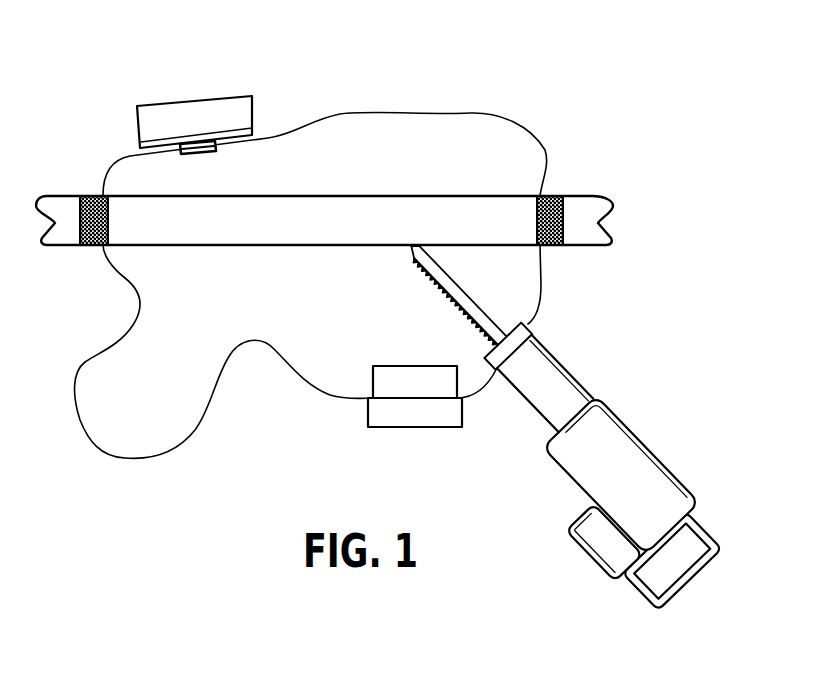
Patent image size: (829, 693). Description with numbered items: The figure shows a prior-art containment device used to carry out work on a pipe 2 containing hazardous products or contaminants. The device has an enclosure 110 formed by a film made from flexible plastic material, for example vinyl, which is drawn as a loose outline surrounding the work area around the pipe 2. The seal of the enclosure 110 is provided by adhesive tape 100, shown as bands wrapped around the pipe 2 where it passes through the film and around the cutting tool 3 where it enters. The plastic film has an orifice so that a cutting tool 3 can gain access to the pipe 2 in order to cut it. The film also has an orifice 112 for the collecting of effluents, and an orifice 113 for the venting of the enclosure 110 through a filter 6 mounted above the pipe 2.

The pipe 2 is at (363, 236).
The cutting tool 3 is at (678, 462).
The filter 6 is at (167, 108).
The adhesive tape 100 is at (87, 192).
The enclosure 110 is at (139, 407).
The orifice 112 is at (394, 412).
The orifice 113 is at (188, 155).